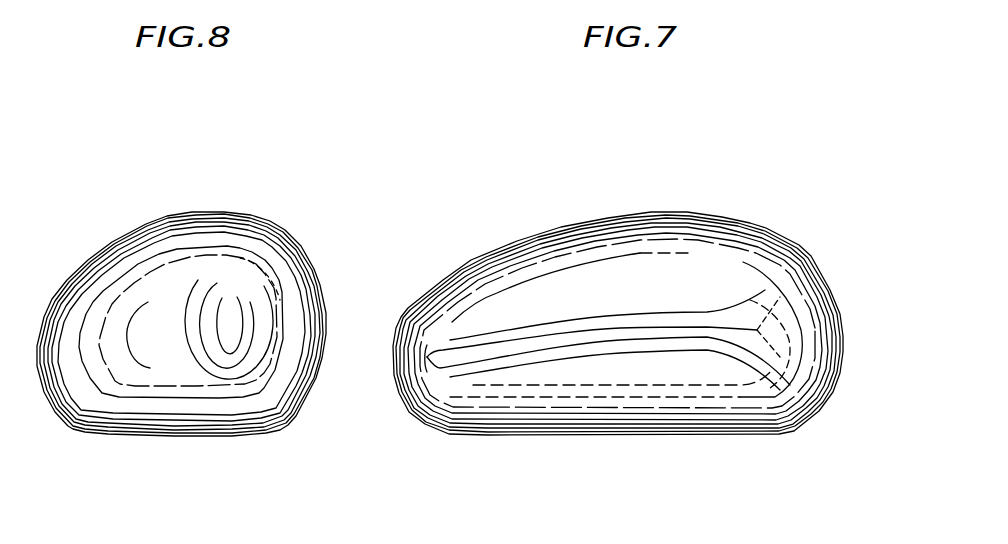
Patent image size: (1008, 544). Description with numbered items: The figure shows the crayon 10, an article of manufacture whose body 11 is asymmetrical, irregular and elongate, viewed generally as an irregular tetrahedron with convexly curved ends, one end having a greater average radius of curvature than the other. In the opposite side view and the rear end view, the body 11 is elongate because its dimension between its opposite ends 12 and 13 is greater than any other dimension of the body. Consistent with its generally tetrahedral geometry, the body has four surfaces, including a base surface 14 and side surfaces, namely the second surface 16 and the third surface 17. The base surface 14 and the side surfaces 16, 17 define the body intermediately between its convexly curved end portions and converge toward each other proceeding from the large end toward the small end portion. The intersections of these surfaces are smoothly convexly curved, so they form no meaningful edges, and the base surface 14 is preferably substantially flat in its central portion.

In FIG. 8, the crayon 10 is at (313, 210).
In FIG. 7, the crayon 10 is at (780, 210).
In FIG. 8, the body 11 is at (200, 263).
In FIG. 7, the body 11 is at (618, 252).
In FIG. 7, the end 12 is at (841, 345).
In FIG. 8, the end 13 is at (233, 317).
In FIG. 7, the end 13 is at (397, 370).
In FIG. 8, the base surface 14 is at (148, 437).
In FIG. 7, the base surface 14 is at (632, 436).
In FIG. 8, the second surface 16 is at (325, 332).
In FIG. 8, the third surface 17 is at (78, 294).
In FIG. 7, the third surface 17 is at (562, 293).